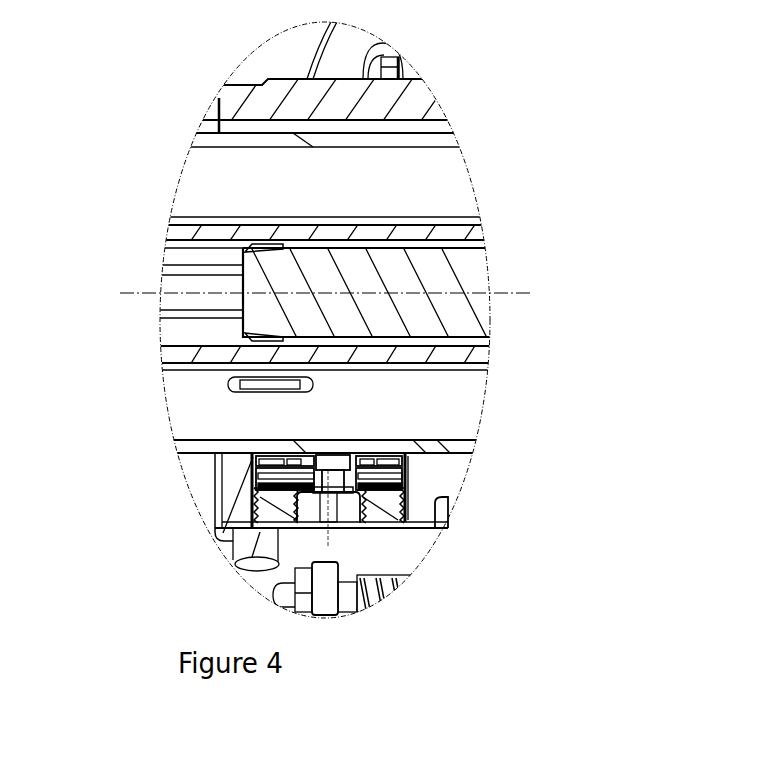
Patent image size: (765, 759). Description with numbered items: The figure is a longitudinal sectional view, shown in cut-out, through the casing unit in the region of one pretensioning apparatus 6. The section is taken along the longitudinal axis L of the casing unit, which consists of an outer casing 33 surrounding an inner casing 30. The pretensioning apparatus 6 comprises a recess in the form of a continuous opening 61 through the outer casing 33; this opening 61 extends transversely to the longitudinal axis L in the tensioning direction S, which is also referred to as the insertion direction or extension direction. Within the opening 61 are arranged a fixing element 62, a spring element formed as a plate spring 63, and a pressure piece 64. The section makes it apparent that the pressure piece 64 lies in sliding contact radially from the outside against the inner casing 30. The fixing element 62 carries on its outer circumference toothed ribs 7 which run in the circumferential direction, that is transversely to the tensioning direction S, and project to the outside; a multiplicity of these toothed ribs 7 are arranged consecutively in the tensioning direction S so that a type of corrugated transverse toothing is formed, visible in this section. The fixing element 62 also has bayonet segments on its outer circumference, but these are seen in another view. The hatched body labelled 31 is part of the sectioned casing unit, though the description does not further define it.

The bearing sleeve 31 is at (455, 266).
The longitudinal axis L is at (528, 291).
The inner casing 30 is at (460, 446).
The pretensioning apparatus 6 is at (420, 475).
The outer casing 33 is at (450, 479).
The pressure piece 64 is at (262, 462).
The plate spring 63 is at (262, 478).
The toothed ribs 7 is at (258, 532).
The fixing element 62 is at (363, 510).
The tensioning direction S is at (328, 533).
The opening 61 is at (447, 524).